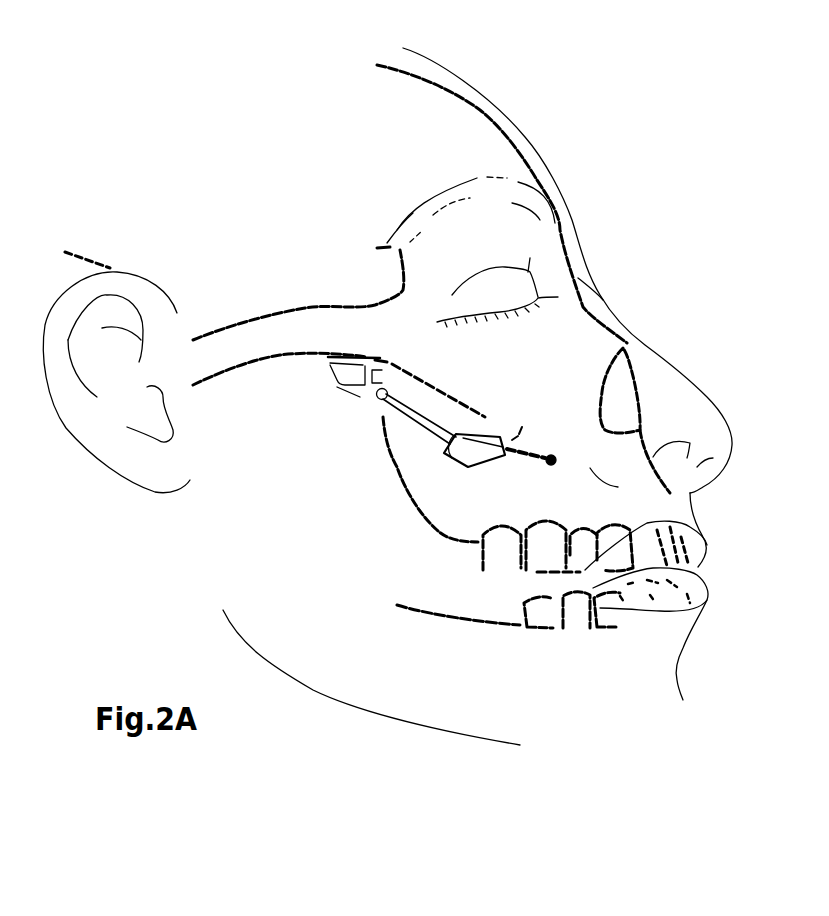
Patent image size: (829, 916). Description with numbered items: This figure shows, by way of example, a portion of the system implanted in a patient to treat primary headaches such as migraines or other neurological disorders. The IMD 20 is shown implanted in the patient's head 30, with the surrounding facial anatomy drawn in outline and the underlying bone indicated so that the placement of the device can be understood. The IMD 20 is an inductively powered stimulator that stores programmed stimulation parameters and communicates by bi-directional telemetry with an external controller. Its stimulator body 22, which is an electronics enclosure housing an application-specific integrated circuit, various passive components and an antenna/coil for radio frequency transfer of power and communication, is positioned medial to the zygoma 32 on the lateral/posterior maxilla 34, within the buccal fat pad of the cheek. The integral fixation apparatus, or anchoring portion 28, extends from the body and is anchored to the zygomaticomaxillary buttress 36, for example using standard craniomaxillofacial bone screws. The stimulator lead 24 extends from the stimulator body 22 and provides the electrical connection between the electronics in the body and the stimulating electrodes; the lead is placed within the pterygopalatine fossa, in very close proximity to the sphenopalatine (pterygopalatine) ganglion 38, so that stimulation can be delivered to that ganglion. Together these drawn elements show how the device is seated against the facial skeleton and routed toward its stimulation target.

The IMD 20 is at (465, 418).
The stimulator body 22 is at (477, 453).
The stimulator lead 24 is at (418, 406).
The anchoring portion 28 is at (530, 463).
The head 30 is at (410, 143).
The zygoma 32 is at (373, 413).
The maxilla 34 is at (440, 483).
The zygomaticomaxillary buttress 36 is at (523, 437).
The sphenopalatine ganglion 38 is at (362, 397).